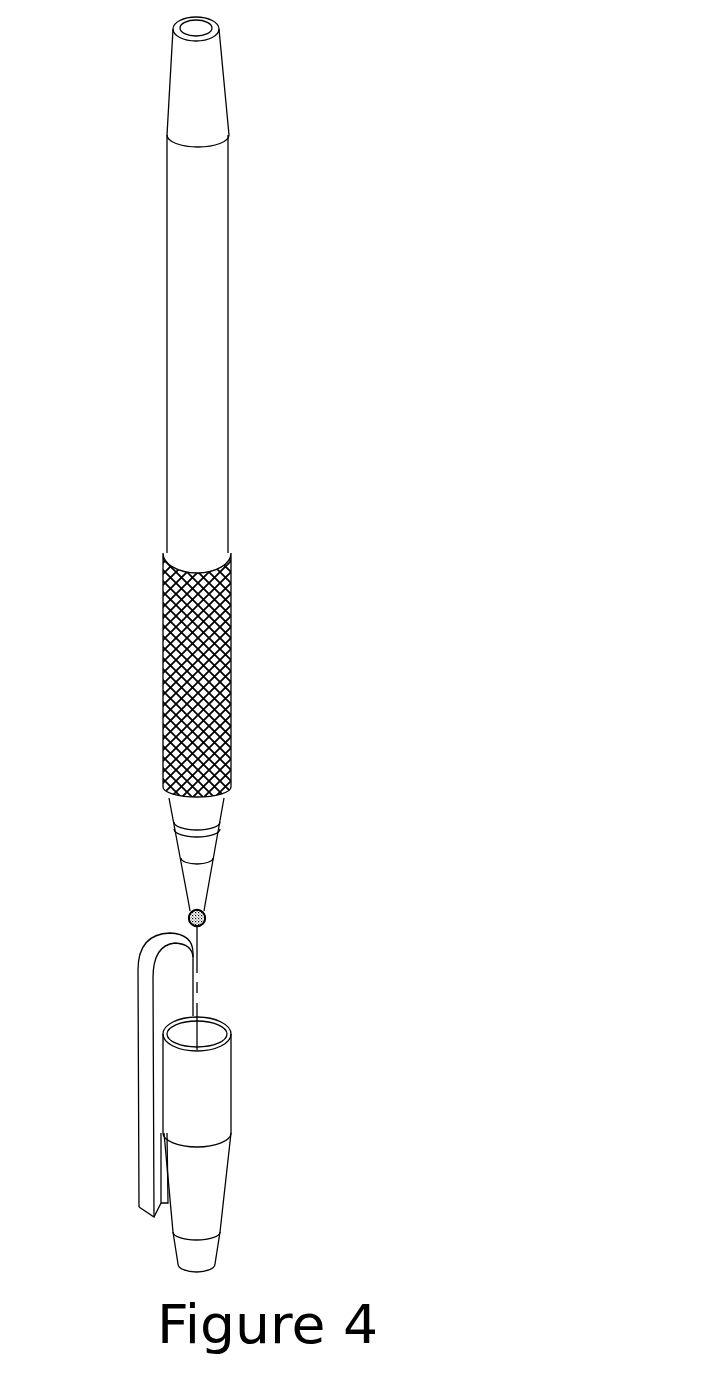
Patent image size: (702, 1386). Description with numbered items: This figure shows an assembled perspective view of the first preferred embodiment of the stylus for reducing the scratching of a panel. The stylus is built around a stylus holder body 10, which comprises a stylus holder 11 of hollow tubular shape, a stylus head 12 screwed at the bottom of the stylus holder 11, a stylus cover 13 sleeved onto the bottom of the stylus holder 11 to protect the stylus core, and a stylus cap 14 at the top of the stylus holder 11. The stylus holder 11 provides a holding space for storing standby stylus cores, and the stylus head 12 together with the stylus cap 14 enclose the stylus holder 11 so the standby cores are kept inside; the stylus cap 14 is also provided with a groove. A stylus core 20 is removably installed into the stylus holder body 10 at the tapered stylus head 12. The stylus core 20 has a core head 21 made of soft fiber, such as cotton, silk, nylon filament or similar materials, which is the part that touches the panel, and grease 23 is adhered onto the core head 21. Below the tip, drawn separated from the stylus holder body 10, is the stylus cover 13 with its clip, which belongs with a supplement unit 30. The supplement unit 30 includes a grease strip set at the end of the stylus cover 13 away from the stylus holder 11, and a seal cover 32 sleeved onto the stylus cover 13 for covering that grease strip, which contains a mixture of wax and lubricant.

The stylus holder body 10 is at (212, 472).
The stylus holder 11 is at (210, 267).
The stylus head 12 is at (193, 873).
The stylus cover 13 is at (205, 1182).
The stylus cap 14 is at (222, 113).
The stylus core 20 is at (165, 906).
The core head 21 is at (207, 912).
The grease 23 is at (197, 918).
The supplement unit 30 is at (206, 1102).
The seal cover 32 is at (187, 1253).